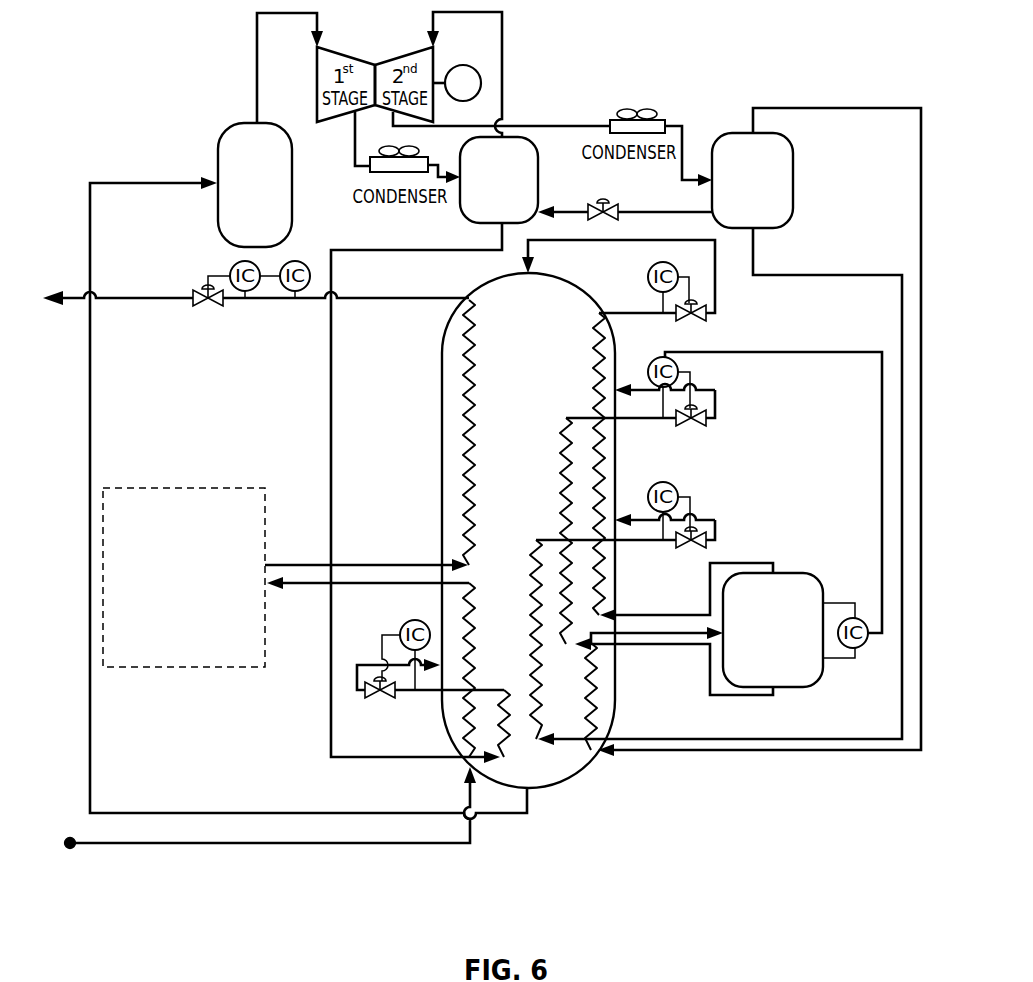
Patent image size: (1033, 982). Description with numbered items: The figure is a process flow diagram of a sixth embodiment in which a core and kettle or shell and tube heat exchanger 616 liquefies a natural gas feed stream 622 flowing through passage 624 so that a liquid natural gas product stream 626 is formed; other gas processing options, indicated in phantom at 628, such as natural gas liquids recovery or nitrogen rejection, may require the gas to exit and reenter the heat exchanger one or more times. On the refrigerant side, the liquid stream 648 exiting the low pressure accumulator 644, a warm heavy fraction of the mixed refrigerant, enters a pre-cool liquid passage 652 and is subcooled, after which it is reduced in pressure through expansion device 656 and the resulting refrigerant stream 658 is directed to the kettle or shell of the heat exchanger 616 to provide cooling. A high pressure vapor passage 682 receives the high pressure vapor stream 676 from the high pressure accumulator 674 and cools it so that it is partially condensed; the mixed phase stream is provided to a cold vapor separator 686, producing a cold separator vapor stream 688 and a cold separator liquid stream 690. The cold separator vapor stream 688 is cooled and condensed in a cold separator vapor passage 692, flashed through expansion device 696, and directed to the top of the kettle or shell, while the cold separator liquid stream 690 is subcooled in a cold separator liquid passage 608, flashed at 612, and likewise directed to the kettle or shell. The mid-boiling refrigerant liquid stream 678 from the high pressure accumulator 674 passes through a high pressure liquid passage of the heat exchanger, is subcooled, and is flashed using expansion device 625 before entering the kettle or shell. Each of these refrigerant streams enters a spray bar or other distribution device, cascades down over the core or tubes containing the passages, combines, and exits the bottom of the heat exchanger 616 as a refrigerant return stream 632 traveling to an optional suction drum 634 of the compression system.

The cold separator liquid passage 608 is at (568, 498).
The expansion device 612 is at (700, 423).
The core and kettle or shell and tube heat exchanger 616 is at (440, 388).
The natural gas feed stream 622 is at (530, 598).
The passage 624 is at (474, 608).
The expansion device 625 is at (681, 547).
The liquid natural gas product stream 626 is at (270, 303).
The other gas processing options 628 is at (208, 668).
The refrigerant return stream 632 is at (88, 742).
The suction drum 634 is at (217, 153).
The low pressure accumulator 644 is at (546, 192).
The liquid stream 648 is at (403, 249).
The pre-cool liquid passage 652 is at (503, 748).
The expansion device 656 is at (373, 697).
The refrigerant stream 658 is at (378, 665).
The high pressure accumulator 674 is at (794, 180).
The high pressure vapor stream 676 is at (841, 108).
The mid-boiling refrigerant liquid stream 678 is at (755, 257).
The high pressure vapor passage 682 is at (600, 683).
The cold vapor separator 686 is at (798, 688).
The cold separator vapor stream 688 is at (770, 563).
The cold separator liquid stream 690 is at (752, 698).
The cold separator vapor passage 692 is at (604, 472).
The expansion device 696 is at (707, 315).